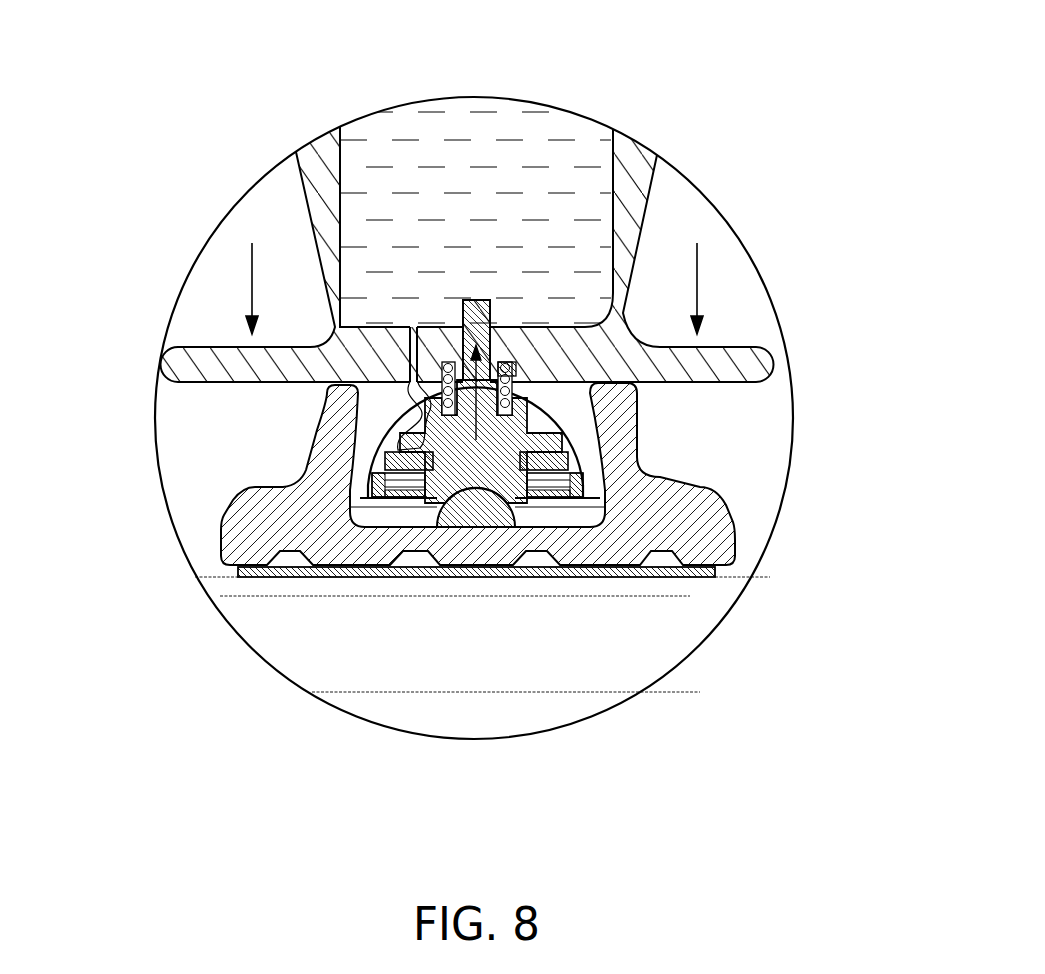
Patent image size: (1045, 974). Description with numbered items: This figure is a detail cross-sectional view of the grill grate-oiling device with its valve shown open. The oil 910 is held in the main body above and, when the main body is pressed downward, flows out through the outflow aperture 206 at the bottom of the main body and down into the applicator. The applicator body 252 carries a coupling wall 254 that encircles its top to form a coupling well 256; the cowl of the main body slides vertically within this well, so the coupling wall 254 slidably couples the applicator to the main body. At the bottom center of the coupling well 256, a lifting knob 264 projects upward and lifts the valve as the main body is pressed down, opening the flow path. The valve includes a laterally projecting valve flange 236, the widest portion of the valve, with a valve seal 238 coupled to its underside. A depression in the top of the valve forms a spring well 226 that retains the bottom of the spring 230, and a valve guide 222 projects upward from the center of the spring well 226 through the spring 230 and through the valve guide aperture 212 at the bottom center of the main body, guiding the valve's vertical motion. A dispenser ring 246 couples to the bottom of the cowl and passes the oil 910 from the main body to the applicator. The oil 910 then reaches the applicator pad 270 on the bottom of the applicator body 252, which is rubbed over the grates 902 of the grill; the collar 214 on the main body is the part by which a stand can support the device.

The outflow aperture 206 is at (413, 345).
The valve guide aperture 212 is at (492, 325).
The collar 214 is at (192, 362).
The valve guide 222 is at (490, 300).
The spring well 226 is at (600, 422).
The spring 230 is at (505, 387).
The valve flange 236 is at (403, 444).
The valve seal 238 is at (430, 463).
The dispenser ring 246 is at (396, 498).
The applicator body 252 is at (247, 532).
The coupling wall 254 is at (507, 415).
The coupling well 256 is at (558, 528).
The lifting knob 264 is at (476, 512).
The applicator pad 270 is at (262, 577).
The grates 902 is at (372, 672).
The oil 910 is at (513, 177).